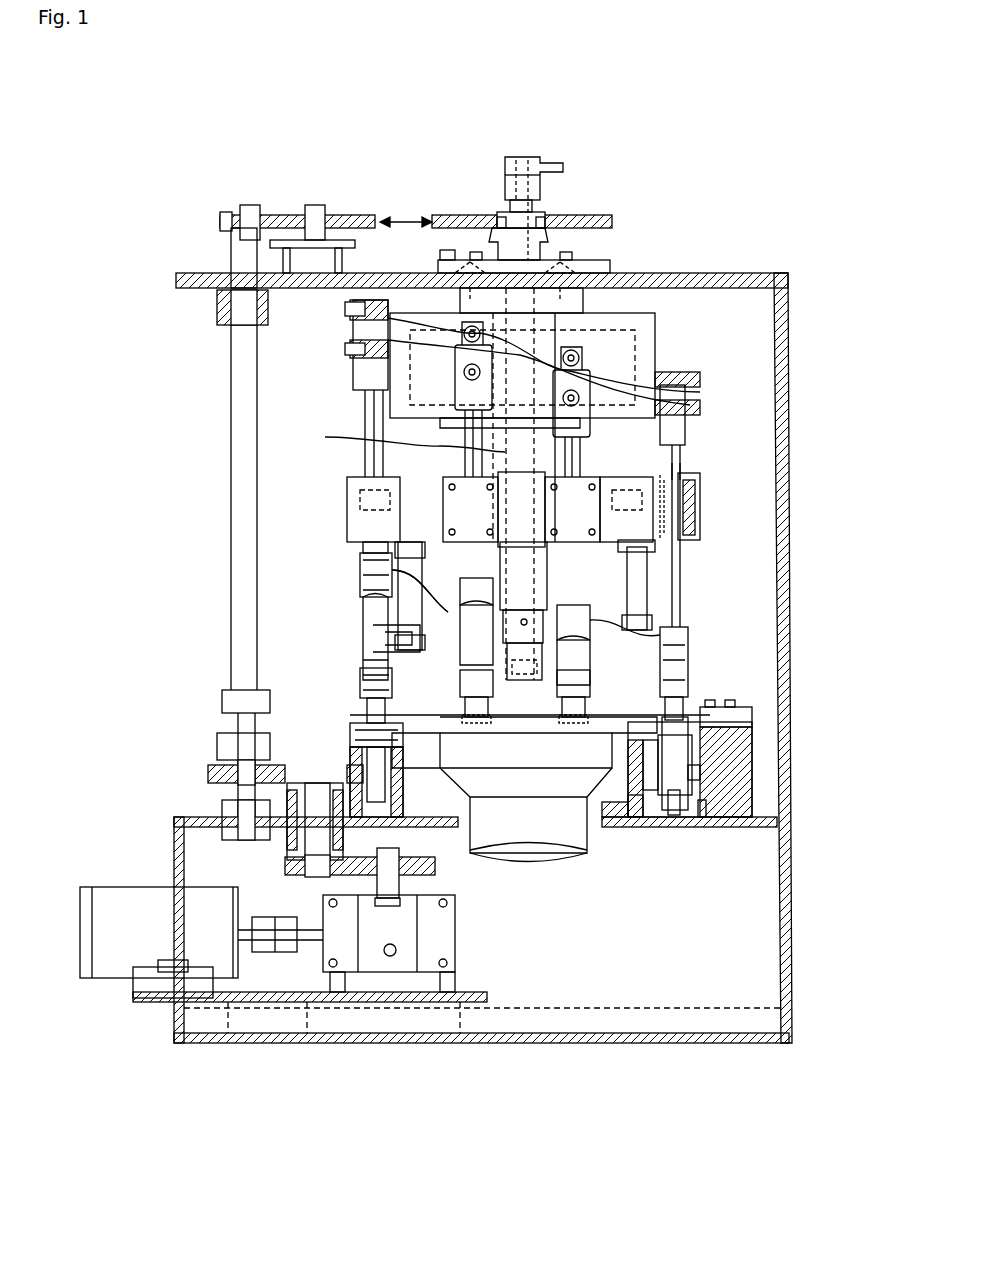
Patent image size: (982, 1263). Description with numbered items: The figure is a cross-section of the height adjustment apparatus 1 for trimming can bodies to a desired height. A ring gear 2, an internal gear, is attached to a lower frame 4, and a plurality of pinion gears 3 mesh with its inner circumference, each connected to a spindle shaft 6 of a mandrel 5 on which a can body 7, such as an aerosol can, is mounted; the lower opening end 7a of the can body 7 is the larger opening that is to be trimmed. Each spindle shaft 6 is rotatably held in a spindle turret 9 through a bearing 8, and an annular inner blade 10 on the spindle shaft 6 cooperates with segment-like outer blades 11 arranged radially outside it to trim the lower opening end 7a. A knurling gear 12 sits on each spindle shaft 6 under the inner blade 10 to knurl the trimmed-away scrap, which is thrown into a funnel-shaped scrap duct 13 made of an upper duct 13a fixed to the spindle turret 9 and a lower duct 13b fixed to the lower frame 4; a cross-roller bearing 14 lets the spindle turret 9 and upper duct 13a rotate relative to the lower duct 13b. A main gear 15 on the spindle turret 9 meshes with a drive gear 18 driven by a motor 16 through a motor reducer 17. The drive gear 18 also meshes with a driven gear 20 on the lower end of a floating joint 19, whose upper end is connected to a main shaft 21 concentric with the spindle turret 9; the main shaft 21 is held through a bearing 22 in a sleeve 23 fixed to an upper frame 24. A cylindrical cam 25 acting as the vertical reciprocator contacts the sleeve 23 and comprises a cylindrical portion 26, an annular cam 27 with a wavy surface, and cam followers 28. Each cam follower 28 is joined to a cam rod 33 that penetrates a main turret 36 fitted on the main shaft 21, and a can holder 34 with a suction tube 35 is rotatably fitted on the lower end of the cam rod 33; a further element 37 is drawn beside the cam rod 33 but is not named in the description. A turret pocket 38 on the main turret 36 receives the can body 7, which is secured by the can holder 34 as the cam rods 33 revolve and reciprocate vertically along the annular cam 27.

The height adjustment apparatus 1 is at (668, 188).
The ring gear 2 is at (702, 810).
The pinion gear 3 is at (668, 805).
The lower frame 4 is at (740, 822).
The mandrel 5 is at (365, 678).
The spindle shaft 6 is at (752, 740).
The can body 7 is at (370, 612).
The lower opening end 7a is at (385, 665).
The bearing 8 is at (352, 740).
The spindle turret 9 is at (350, 760).
The inner blade 10 is at (695, 705).
The outer blade 11 is at (735, 715).
The knurling gear 12 is at (368, 708).
The scrap duct 13 is at (539, 856).
The upper duct 13a is at (595, 760).
The lower duct 13b is at (528, 860).
The cross-roller bearing 14 is at (625, 760).
The main gear 15 is at (700, 775).
The motor 16 is at (150, 890).
The motor reducer 17 is at (400, 955).
The drive gear 18 is at (300, 770).
The floating joint 19 is at (240, 515).
The driven gear 20 is at (215, 775).
The main shaft 21 is at (438, 435).
The bearing 22 is at (560, 262).
The sleeve 23 is at (600, 268).
The upper frame 24 is at (740, 275).
The cylindrical cam 25 is at (720, 330).
The cylindrical portion 26 is at (650, 355).
The annular cam 27 is at (735, 398).
The cam follower 28 is at (360, 373).
The cam rod 33 is at (678, 580).
The can holder 34 is at (362, 580).
The suction tube 35 is at (612, 628).
The main turret 36 is at (625, 480).
The guide 37 is at (700, 522).
The turret pocket 38 is at (375, 640).